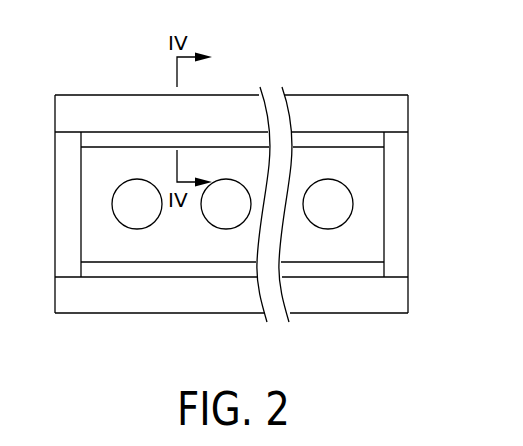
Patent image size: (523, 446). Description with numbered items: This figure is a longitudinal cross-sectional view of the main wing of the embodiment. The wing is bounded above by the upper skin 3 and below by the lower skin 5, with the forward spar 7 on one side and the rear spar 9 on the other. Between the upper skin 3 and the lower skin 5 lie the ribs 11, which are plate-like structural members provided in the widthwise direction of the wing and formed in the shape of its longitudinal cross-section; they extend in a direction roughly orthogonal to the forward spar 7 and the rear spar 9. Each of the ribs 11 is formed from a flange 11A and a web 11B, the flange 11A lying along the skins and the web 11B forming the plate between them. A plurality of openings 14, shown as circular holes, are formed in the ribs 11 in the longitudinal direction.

The upper skin 3 is at (347, 107).
The lower skin 5 is at (197, 305).
The forward spar 7 is at (67, 196).
The rear spar 9 is at (397, 239).
The ribs 11 is at (463, 130).
The flange 11A is at (373, 140).
The web 11B is at (370, 174).
The openings 14 is at (118, 221).